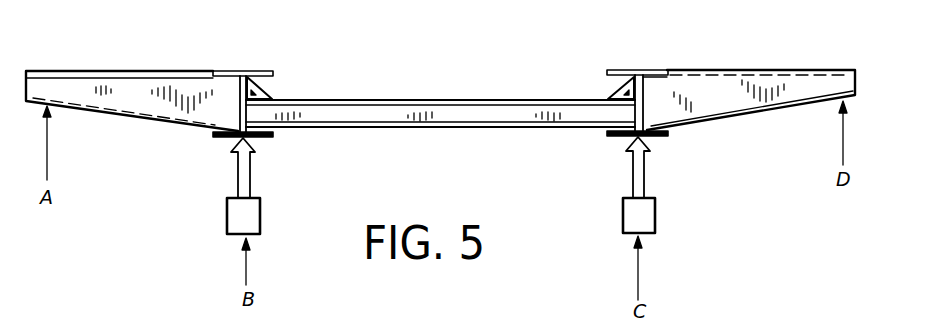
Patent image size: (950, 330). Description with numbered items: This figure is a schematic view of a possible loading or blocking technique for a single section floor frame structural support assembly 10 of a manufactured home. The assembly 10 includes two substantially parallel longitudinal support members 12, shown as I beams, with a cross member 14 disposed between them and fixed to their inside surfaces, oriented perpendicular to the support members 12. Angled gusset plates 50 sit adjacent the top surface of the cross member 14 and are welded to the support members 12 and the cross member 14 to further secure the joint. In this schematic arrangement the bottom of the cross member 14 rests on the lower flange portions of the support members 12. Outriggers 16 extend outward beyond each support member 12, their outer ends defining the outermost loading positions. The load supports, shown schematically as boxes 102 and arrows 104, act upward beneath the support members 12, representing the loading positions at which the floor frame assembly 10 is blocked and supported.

The floor frame structural support assembly 10 is at (492, 70).
The longitudinal support member 12 is at (265, 70).
The cross member 14 is at (401, 99).
The outrigger 16 is at (170, 80).
The angled gusset plate 50 is at (265, 94).
The load support 102 is at (227, 207).
The load support arrow 104 is at (246, 181).